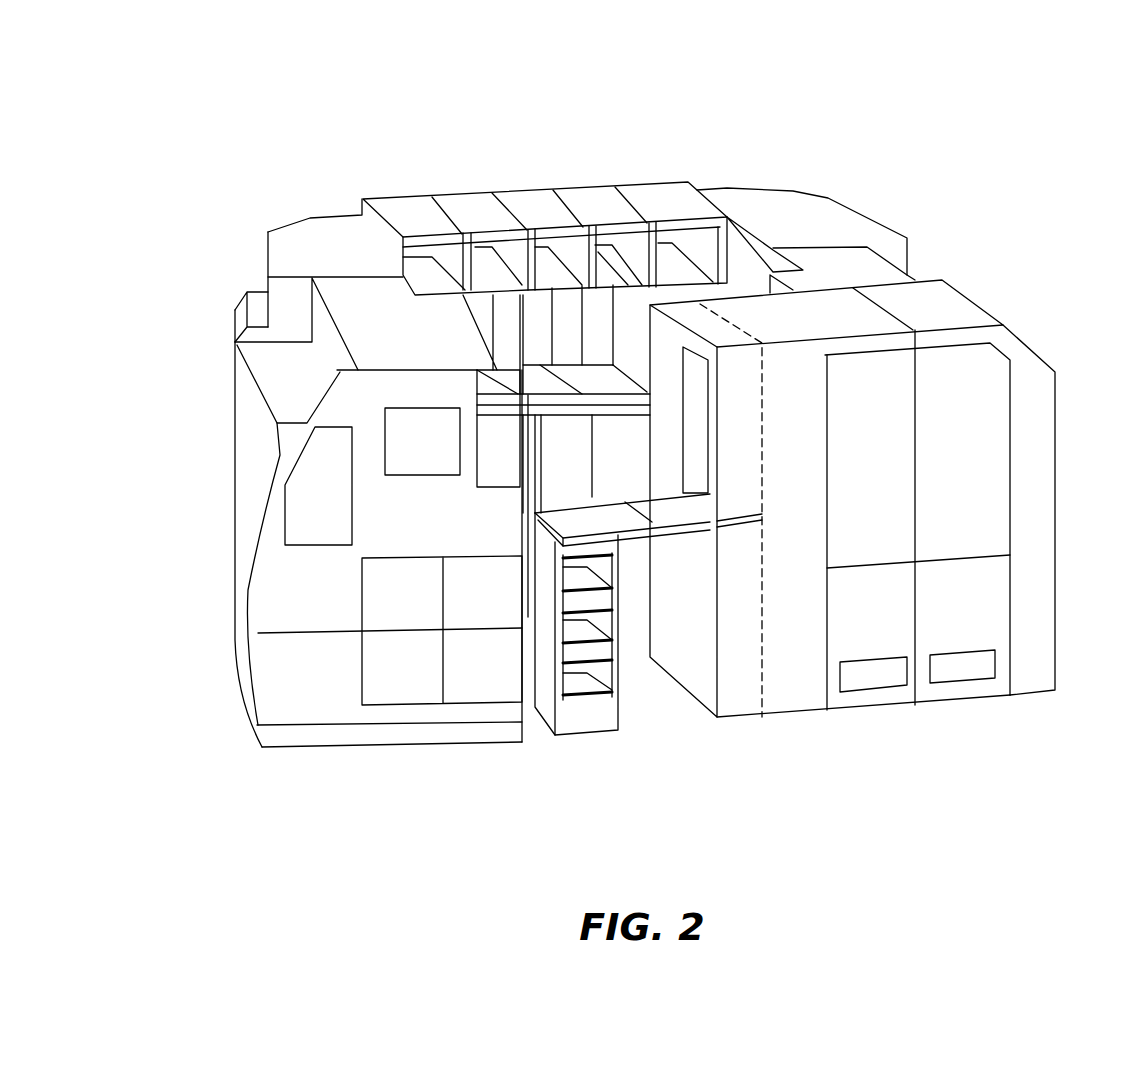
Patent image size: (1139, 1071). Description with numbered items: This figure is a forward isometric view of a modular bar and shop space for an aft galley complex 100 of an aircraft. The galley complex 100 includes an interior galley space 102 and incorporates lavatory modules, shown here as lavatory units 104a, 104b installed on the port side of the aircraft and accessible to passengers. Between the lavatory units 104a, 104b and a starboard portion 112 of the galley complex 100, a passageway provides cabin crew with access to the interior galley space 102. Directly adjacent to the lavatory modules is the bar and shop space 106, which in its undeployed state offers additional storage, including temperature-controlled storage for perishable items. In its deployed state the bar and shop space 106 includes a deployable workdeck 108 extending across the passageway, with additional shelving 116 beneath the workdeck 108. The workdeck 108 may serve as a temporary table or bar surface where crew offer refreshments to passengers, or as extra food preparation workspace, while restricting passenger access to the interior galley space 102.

The galley complex 100 is at (93, 135).
The interior galley space 102 is at (633, 655).
The lavatory unit 104a is at (892, 598).
The lavatory unit 104b is at (988, 475).
The bar and shop space 106 is at (742, 588).
The deployable workdeck 108 is at (583, 517).
The starboard portion 112 is at (490, 638).
The shelving 116 is at (580, 682).